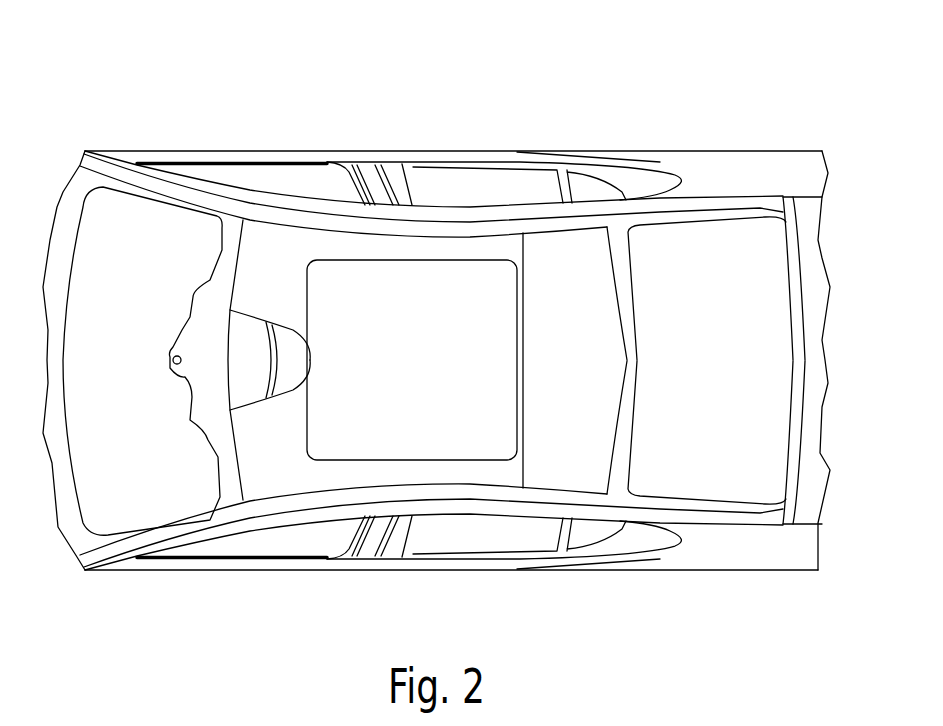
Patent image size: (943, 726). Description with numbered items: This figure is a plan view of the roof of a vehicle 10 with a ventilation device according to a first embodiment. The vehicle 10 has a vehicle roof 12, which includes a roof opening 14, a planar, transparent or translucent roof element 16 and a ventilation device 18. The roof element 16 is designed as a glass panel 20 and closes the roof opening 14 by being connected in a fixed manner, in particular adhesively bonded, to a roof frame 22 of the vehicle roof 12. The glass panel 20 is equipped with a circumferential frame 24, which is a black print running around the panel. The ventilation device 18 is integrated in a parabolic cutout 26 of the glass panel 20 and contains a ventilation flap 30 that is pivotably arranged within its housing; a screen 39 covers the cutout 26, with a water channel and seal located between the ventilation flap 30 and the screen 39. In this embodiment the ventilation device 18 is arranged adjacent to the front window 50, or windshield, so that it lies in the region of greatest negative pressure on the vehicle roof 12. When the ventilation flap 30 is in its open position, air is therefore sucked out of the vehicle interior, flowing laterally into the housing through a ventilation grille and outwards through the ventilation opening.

The vehicle 10 is at (745, 95).
The vehicle roof 12 is at (474, 243).
The roof opening 14 is at (394, 238).
The roof element 16 is at (346, 286).
The ventilation device 18 is at (288, 308).
The glass panel 20 is at (475, 443).
The roof frame 22 is at (618, 237).
The circumferential frame 24 is at (394, 473).
The parabolic cutout 26 is at (273, 410).
The ventilation flap 30 is at (290, 377).
The screen 39 is at (248, 327).
The front window 50 is at (142, 212).